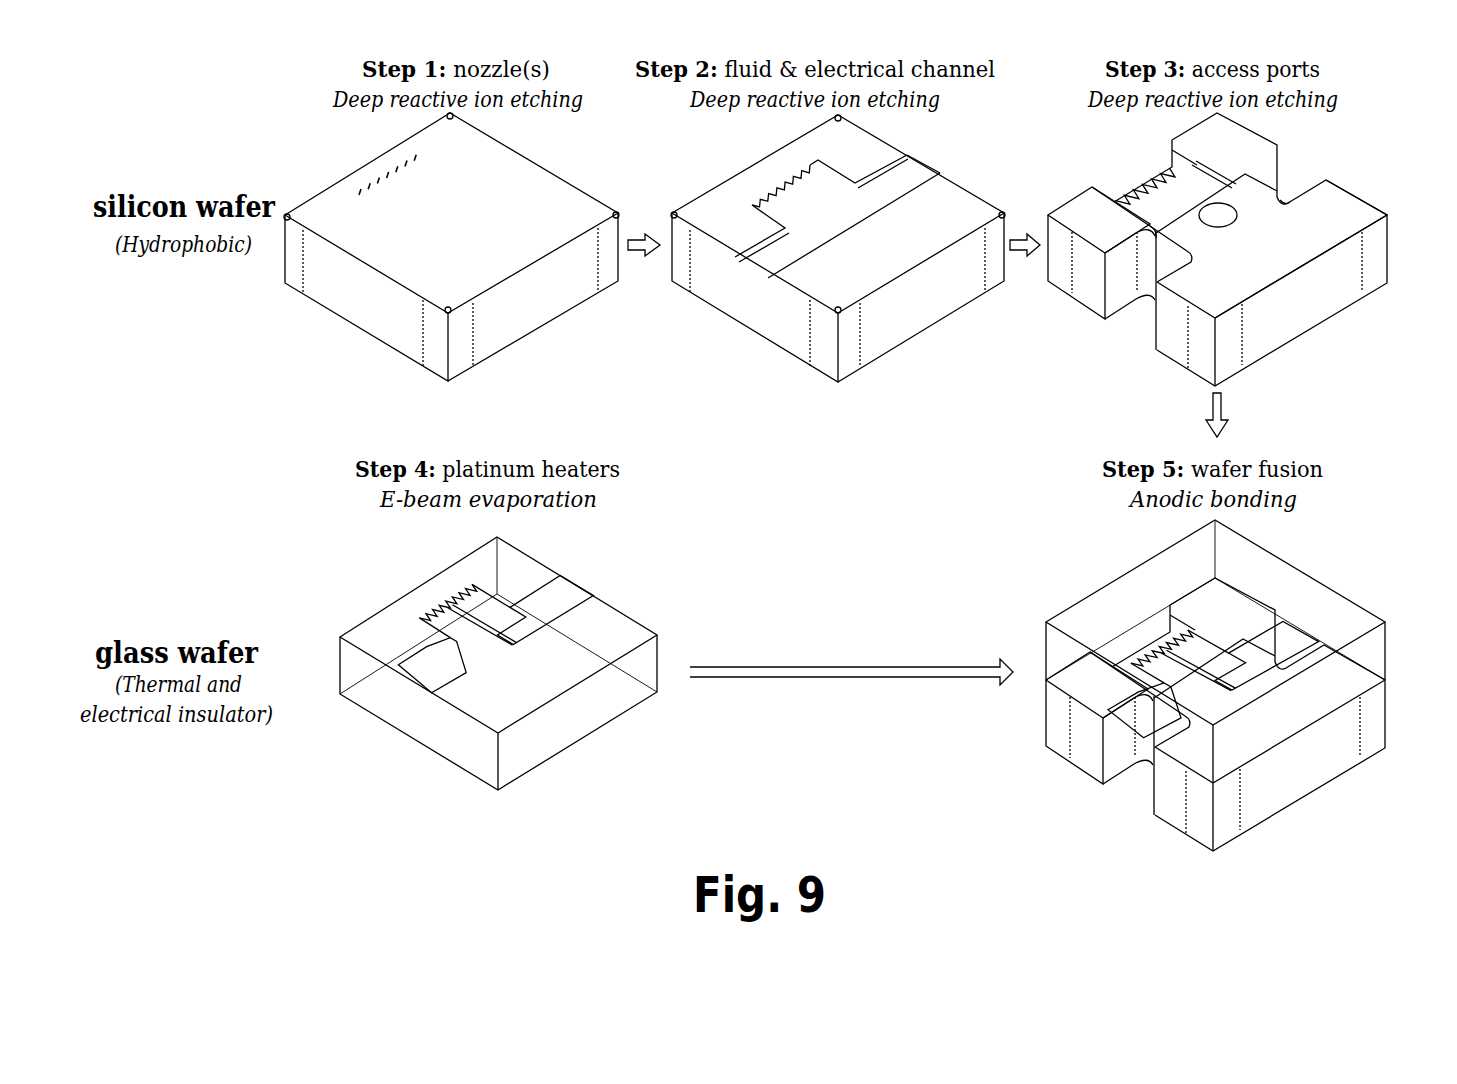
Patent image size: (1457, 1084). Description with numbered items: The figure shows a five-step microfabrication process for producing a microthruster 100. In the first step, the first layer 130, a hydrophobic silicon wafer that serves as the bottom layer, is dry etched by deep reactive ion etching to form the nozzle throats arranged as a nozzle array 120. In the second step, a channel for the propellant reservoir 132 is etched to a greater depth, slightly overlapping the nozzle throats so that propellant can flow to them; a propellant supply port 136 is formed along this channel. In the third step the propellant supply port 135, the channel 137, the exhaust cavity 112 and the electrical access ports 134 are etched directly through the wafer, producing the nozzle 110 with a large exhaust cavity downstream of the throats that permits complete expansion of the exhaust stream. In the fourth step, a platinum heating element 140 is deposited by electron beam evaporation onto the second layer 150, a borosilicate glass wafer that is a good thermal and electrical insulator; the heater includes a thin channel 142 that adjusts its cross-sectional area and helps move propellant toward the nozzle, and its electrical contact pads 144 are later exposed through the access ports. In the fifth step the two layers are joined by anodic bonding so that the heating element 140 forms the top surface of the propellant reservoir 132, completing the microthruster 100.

The microthruster 100 is at (1055, 770).
The nozzle 110 is at (1208, 347).
The exhaust cavity 112 is at (1146, 152).
The nozzle array 120 is at (372, 152).
The first layer 130 is at (857, 476).
The propellant reservoir 132 is at (836, 211).
The access port 134 is at (1310, 150).
The propellant supply port 135 is at (1228, 233).
The propellant supply port 136 is at (928, 165).
The channel 137 is at (1168, 232).
The heating element 140 is at (465, 597).
The channel 142 is at (518, 653).
The electrical contact pads 144 is at (562, 580).
The second layer 150 is at (862, 667).